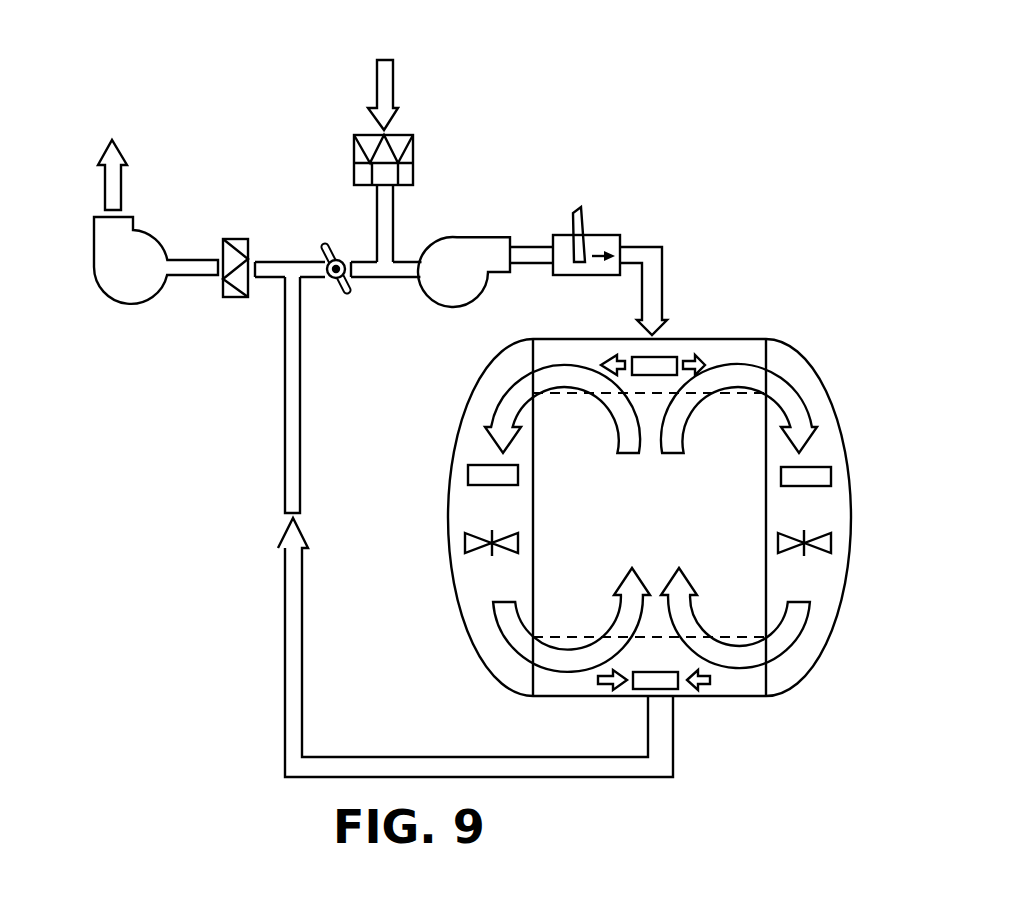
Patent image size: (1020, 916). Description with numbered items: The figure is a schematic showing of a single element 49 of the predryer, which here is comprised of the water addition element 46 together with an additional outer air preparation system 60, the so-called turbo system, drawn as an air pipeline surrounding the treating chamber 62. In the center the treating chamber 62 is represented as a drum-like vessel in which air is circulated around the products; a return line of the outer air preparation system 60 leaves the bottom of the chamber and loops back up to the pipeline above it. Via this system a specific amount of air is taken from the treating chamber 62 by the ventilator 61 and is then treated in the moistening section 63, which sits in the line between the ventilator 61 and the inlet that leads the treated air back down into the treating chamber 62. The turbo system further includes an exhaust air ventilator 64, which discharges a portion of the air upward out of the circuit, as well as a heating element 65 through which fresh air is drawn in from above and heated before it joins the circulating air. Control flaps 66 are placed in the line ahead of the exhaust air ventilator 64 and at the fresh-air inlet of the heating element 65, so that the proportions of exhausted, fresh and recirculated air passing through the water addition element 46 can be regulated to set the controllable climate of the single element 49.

The water addition element 46 is at (472, 418).
The single element 49 is at (752, 205).
The outer air preparation system 60 is at (292, 700).
The ventilator 61 is at (493, 252).
The treating chamber 62 is at (667, 524).
The moistening section 63 is at (565, 245).
The exhaust air ventilator 64 is at (130, 283).
The heating element 65 is at (413, 147).
The control flaps 66 is at (250, 258).